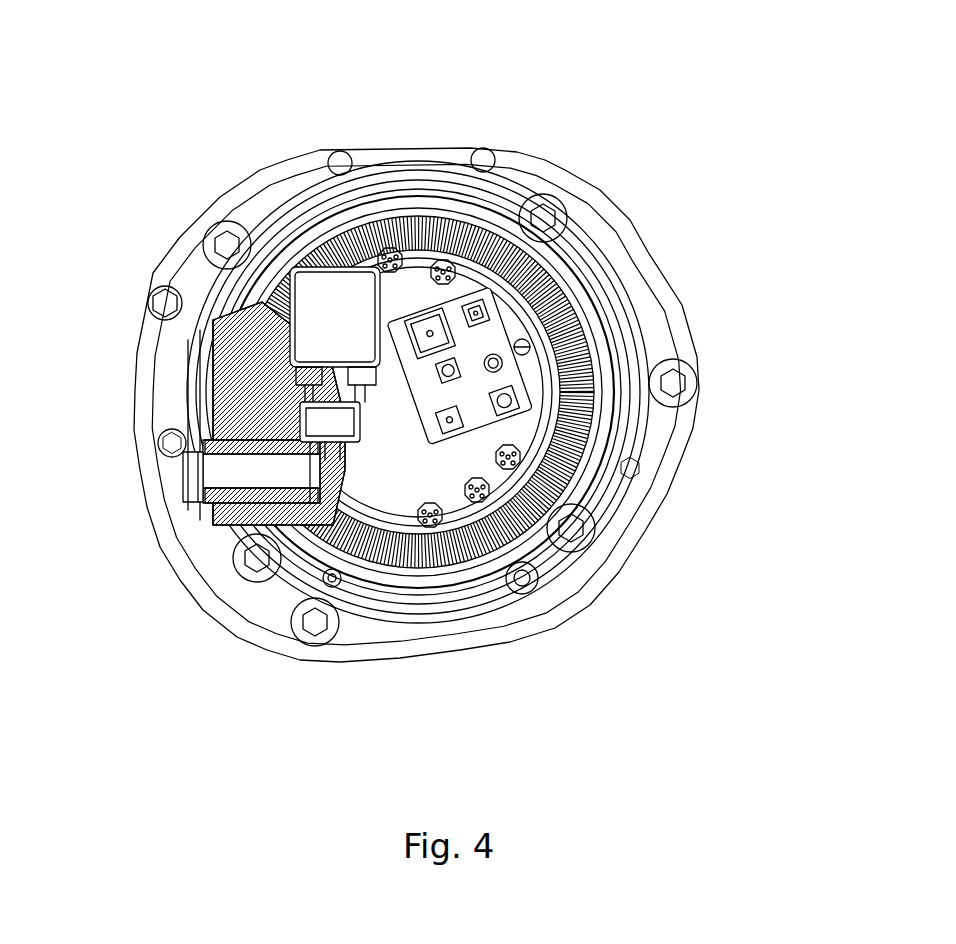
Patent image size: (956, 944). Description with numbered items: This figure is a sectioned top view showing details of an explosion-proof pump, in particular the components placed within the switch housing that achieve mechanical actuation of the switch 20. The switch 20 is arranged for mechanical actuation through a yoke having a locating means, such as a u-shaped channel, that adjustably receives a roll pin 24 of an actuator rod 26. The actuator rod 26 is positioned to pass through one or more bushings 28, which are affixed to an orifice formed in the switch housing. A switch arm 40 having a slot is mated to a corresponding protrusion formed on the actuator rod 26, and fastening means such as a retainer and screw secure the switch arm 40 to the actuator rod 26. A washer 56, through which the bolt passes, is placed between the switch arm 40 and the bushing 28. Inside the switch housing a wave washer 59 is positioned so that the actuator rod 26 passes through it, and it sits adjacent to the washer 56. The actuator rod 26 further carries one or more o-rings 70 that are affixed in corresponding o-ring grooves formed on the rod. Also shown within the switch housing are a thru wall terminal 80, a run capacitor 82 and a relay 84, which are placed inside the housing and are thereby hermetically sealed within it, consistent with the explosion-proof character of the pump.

The switch 20 is at (416, 336).
The roll pin 24 is at (228, 290).
The actuator rod 26 is at (418, 464).
The bushing 28 is at (224, 473).
The switch arm 40 is at (191, 512).
The washer 56 is at (221, 575).
The wave washer 59 is at (199, 359).
The o-ring 70 is at (260, 642).
The thru wall terminal 80 is at (556, 421).
The run capacitor 82 is at (584, 620).
The relay 84 is at (489, 248).